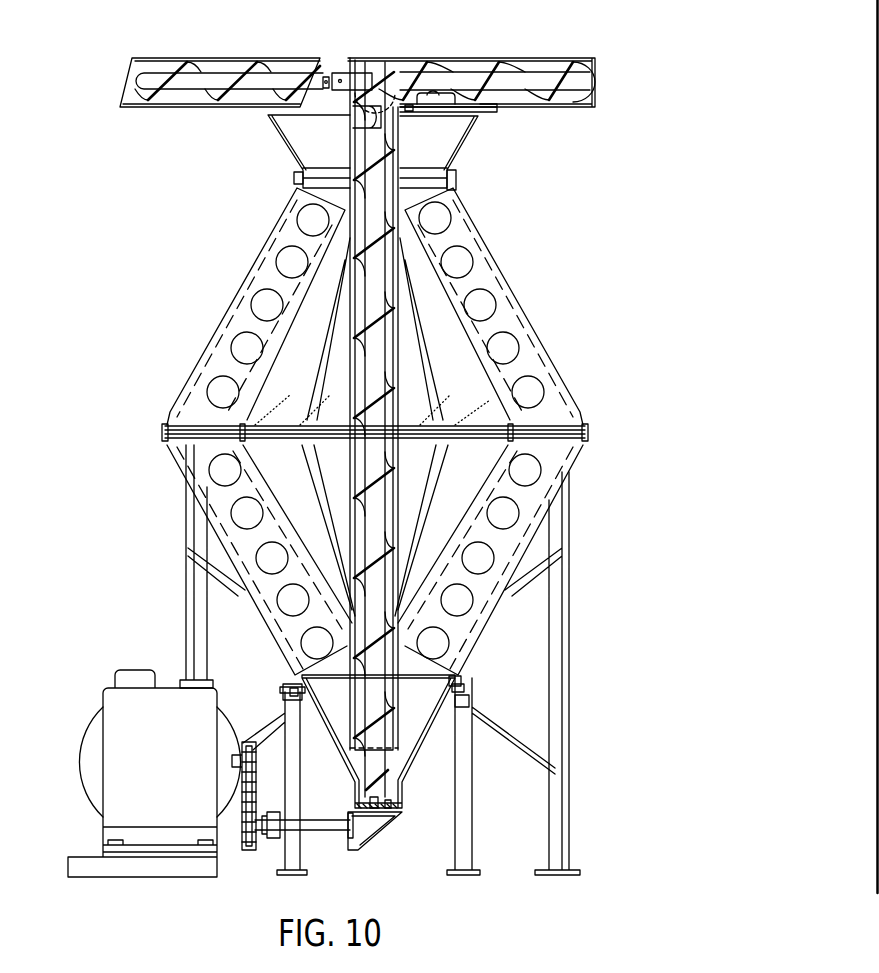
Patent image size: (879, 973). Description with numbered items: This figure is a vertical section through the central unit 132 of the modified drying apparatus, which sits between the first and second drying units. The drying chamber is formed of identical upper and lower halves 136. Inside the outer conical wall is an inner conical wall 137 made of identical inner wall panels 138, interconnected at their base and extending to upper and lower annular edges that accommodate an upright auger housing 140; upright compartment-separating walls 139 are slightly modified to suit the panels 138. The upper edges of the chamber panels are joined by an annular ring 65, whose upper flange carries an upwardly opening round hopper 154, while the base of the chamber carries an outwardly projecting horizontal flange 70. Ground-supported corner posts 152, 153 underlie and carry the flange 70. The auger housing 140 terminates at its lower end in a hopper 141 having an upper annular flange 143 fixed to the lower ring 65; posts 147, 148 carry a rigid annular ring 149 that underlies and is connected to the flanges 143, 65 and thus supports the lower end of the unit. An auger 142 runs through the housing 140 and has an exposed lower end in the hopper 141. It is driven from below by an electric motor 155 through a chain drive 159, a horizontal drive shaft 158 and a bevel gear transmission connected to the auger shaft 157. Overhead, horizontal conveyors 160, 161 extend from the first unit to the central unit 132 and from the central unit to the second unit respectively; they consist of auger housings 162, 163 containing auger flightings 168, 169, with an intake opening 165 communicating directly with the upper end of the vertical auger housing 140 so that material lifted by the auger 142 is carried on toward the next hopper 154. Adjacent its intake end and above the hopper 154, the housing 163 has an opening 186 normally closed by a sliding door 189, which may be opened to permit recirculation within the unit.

The annular ring 65 is at (455, 187).
The horizontal flange 70 is at (587, 422).
The central unit 132 is at (514, 283).
The upper and lower halves 136 is at (553, 355).
The inner conical wall 137 is at (438, 346).
The inner wall panels 138 is at (470, 401).
The compartment-separating walls 139 is at (210, 423).
The auger housing 140 is at (399, 482).
The hopper 141 is at (342, 752).
The auger 142 is at (386, 153).
The upper annular flange 143 is at (469, 708).
The post 147 is at (295, 862).
The post 148 is at (466, 833).
The annular ring 149 is at (466, 686).
The corner post 152 is at (205, 646).
The corner post 153 is at (562, 652).
The round hopper 154 is at (462, 143).
The electric motor 155 is at (118, 770).
The auger shaft 157 is at (400, 802).
The horizontal drive shaft 158 is at (326, 815).
The chain drive 159 is at (248, 760).
The overhead horizontal conveyor 160 is at (186, 56).
The overhead horizontal conveyor 161 is at (548, 56).
The auger housing 162 is at (220, 72).
The auger housing 163 is at (490, 62).
The intake opening 165 is at (360, 102).
The auger flighting 168 is at (240, 104).
The auger flighting 169 is at (553, 98).
The opening 186 is at (436, 93).
The sliding door 189 is at (493, 111).